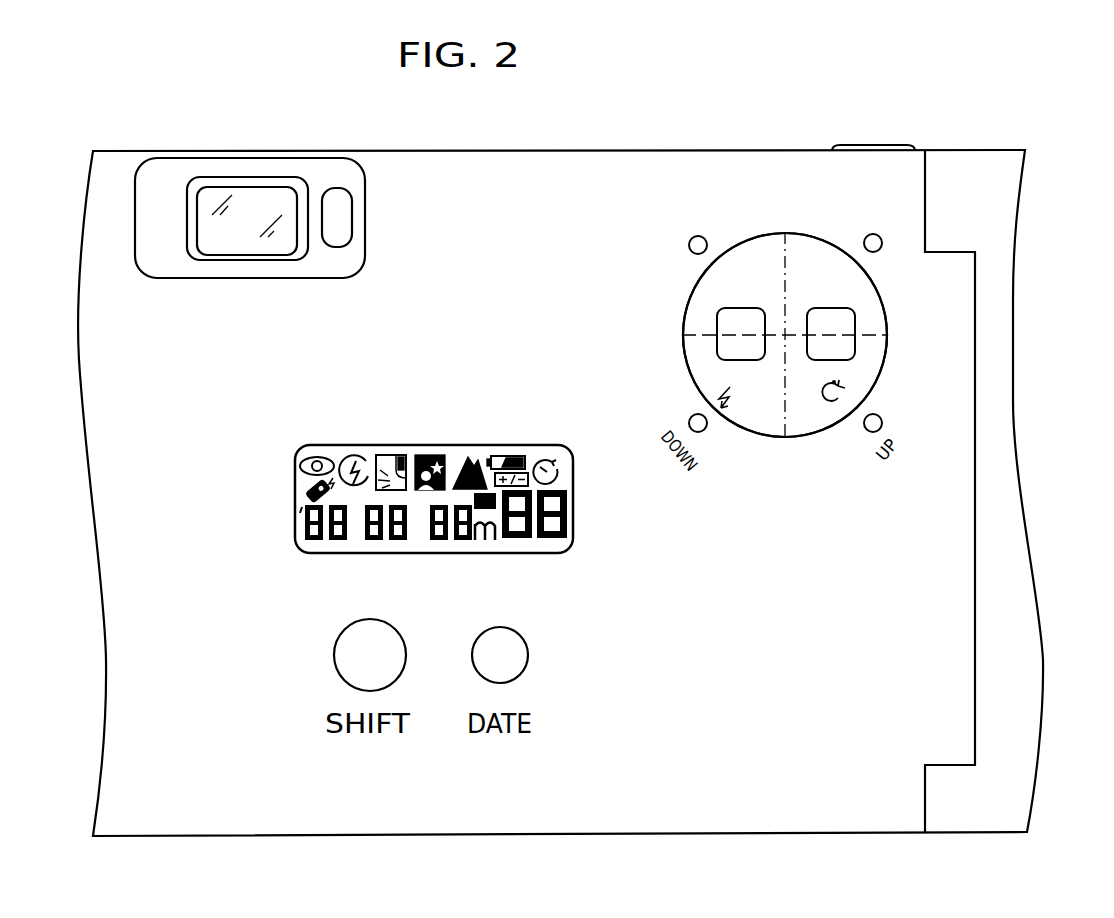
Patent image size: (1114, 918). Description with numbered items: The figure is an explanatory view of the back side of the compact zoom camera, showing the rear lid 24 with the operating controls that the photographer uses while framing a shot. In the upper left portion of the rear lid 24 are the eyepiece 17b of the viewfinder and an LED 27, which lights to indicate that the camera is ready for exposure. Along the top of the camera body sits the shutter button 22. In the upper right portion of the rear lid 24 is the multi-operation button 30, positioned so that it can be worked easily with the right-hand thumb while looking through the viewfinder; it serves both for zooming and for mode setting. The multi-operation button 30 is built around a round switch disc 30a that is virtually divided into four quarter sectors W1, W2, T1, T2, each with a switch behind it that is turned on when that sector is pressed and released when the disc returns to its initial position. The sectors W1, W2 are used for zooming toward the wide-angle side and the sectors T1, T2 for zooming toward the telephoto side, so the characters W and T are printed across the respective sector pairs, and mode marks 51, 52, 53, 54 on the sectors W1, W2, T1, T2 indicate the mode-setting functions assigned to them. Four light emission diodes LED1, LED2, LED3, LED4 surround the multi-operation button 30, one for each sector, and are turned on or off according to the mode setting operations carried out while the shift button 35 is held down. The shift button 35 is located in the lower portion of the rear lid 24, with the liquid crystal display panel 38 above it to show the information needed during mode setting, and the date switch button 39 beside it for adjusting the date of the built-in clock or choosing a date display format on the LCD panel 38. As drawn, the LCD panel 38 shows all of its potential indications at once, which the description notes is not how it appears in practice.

The eyepiece 17b is at (249, 197).
The LED 27 is at (337, 200).
The rear lid 24 is at (526, 195).
The shutter button 22 is at (870, 145).
The multi-operation button 30 is at (893, 309).
The round switch disc 30a is at (684, 325).
The mode mark 51 is at (718, 280).
The mode mark 52 is at (717, 393).
The mode mark 53 is at (858, 270).
The mode mark 54 is at (855, 384).
The liquid crystal display panel 38 is at (434, 445).
The shift button 35 is at (338, 636).
The date switch button 39 is at (528, 650).
The light emission diode LED1 is at (695, 236).
The light emission diode LED2 is at (705, 432).
The light emission diode LED3 is at (876, 234).
The light emission diode LED4 is at (880, 415).
The sector W1 is at (766, 250).
The sector T1 is at (813, 252).
The sector W2 is at (758, 413).
The sector T2 is at (814, 416).